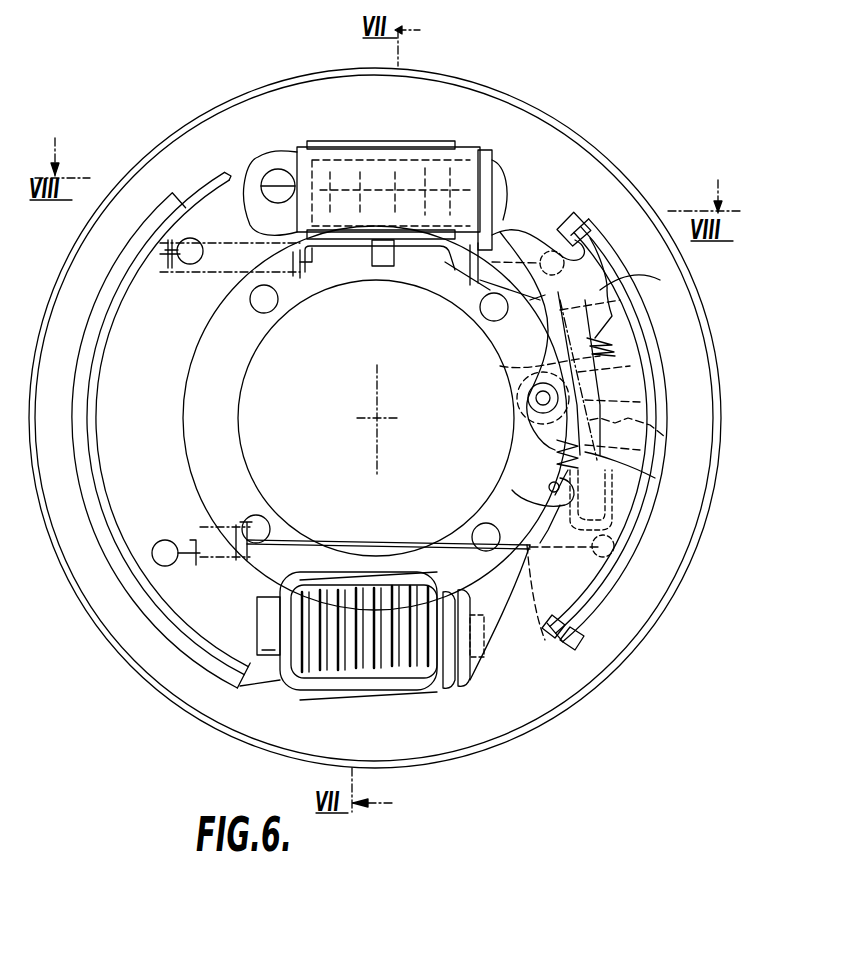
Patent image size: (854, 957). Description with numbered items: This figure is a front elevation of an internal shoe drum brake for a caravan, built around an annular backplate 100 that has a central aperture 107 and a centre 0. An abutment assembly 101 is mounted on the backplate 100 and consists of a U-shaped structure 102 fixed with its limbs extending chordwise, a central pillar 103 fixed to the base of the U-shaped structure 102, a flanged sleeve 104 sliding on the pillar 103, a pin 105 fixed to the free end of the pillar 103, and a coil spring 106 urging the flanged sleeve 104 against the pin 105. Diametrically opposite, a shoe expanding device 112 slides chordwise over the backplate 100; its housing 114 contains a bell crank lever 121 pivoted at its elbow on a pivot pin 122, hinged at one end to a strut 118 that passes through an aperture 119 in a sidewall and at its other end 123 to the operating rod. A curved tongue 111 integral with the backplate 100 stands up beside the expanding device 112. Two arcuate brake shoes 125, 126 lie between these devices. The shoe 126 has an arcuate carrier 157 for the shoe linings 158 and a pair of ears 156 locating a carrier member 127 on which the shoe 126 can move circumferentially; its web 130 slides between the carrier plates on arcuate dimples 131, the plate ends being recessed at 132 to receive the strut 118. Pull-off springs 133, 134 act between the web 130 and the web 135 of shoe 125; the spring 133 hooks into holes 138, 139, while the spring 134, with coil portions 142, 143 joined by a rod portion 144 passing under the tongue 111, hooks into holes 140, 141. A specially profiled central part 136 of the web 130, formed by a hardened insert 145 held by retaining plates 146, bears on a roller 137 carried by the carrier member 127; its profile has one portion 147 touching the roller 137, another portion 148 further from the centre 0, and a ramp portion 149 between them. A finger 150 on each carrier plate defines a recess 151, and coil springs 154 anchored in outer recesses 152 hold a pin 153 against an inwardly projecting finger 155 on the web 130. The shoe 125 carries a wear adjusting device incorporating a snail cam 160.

The centre of the brake 0 is at (378, 420).
The annular backplate 100 is at (246, 503).
The abutment assembly 101 is at (285, 693).
The U-shaped structure 102 is at (342, 690).
The central pillar 103 is at (352, 650).
The flanged sleeve 104 is at (464, 670).
The pin 105 is at (478, 665).
The coil spring 106 is at (414, 680).
The central aperture 107 is at (243, 383).
The curved tongue 111 is at (383, 266).
The shoe expanding device 112 is at (425, 162).
The housing 114 is at (318, 148).
The strut 118 is at (505, 200).
The aperture 119 is at (493, 195).
The bell crank lever 121 is at (393, 150).
The pivot pin 122 is at (362, 150).
The other end of the bell crank lever 123 is at (470, 165).
The arcuate brake shoe 125 is at (148, 447).
The arcuate brake shoe 126 is at (602, 247).
The carrier member 127 is at (520, 590).
The web 130 is at (556, 644).
The arcuate dimples 131 is at (605, 508).
The recess 132 is at (530, 225).
The brake pull-off spring 133 is at (388, 543).
The brake pull-off spring 134 is at (352, 248).
The web 135 is at (147, 405).
The central part of the inner edge of the web 136 is at (570, 432).
The roller 137 is at (528, 398).
The hole 138 is at (175, 545).
The hole 139 is at (600, 552).
The hole 140 is at (147, 230).
The hole 141 is at (551, 275).
The coil portion 142 is at (215, 272).
The coil portion 143 is at (452, 292).
The rod portion 144 is at (320, 288).
The insert 145 is at (640, 402).
The retaining plates 146 is at (653, 429).
The portion 147 is at (640, 450).
The portion 148 is at (508, 362).
The ramp portion 149 is at (630, 366).
The finger 150 is at (520, 500).
The recess 151 is at (531, 524).
The recess 152 is at (660, 280).
The pin 153 is at (556, 476).
The coil spring 154 is at (649, 473).
The finger 155 is at (552, 462).
The ears 156 is at (607, 232).
The arcuate carrier 157 is at (637, 283).
The shoe linings 158 is at (656, 312).
The snail cam 160 is at (248, 190).